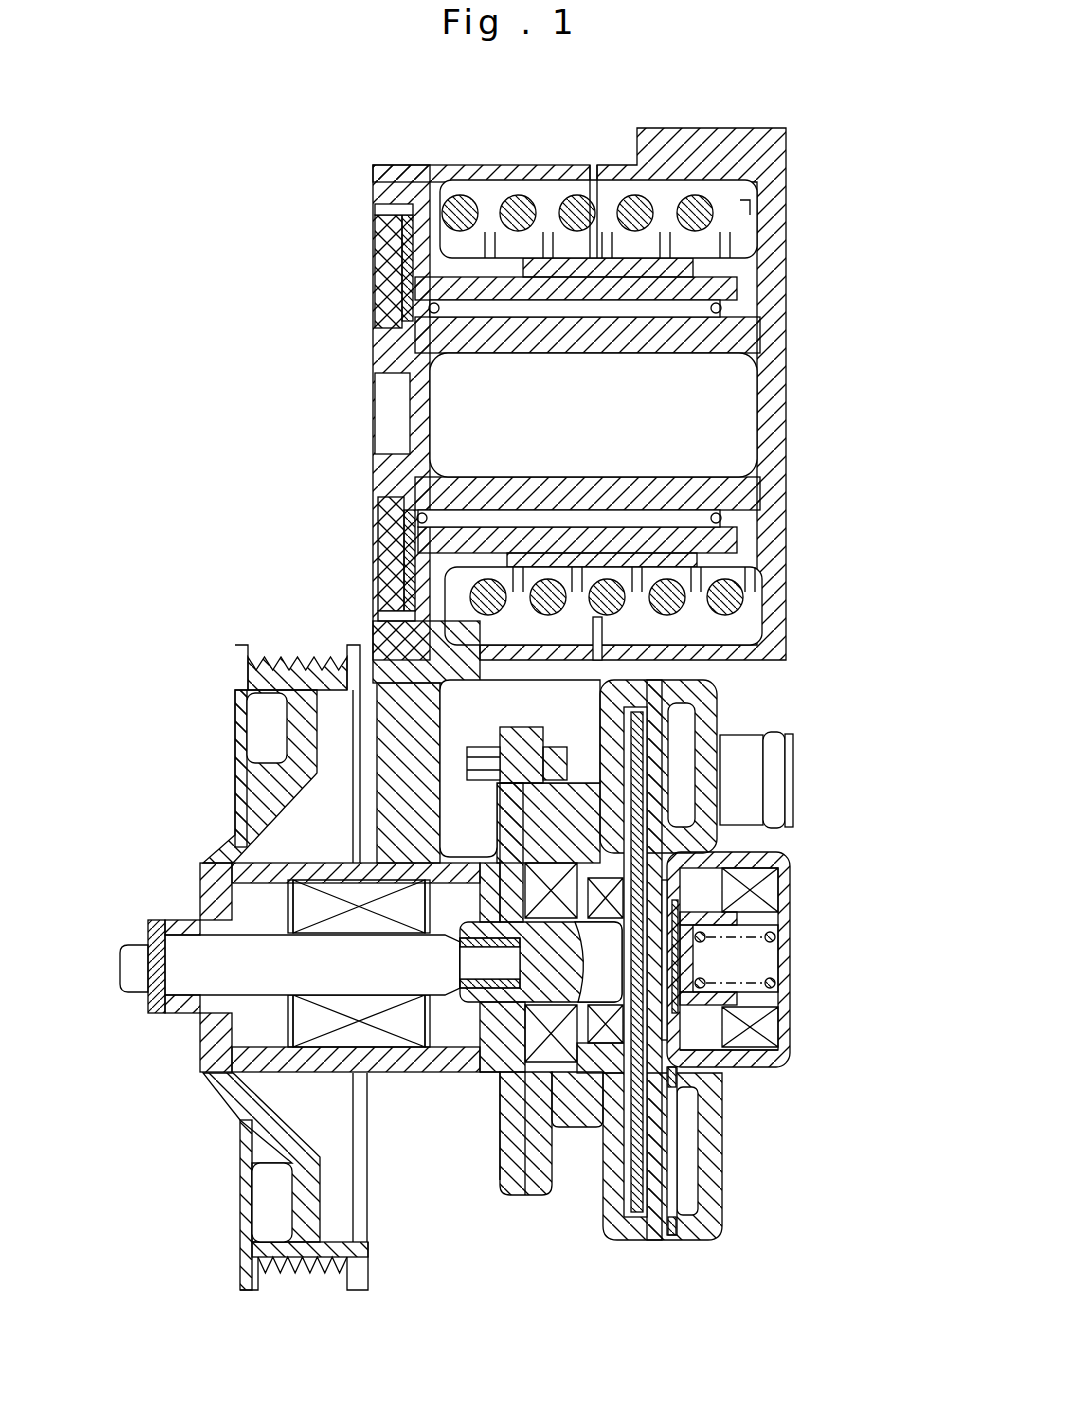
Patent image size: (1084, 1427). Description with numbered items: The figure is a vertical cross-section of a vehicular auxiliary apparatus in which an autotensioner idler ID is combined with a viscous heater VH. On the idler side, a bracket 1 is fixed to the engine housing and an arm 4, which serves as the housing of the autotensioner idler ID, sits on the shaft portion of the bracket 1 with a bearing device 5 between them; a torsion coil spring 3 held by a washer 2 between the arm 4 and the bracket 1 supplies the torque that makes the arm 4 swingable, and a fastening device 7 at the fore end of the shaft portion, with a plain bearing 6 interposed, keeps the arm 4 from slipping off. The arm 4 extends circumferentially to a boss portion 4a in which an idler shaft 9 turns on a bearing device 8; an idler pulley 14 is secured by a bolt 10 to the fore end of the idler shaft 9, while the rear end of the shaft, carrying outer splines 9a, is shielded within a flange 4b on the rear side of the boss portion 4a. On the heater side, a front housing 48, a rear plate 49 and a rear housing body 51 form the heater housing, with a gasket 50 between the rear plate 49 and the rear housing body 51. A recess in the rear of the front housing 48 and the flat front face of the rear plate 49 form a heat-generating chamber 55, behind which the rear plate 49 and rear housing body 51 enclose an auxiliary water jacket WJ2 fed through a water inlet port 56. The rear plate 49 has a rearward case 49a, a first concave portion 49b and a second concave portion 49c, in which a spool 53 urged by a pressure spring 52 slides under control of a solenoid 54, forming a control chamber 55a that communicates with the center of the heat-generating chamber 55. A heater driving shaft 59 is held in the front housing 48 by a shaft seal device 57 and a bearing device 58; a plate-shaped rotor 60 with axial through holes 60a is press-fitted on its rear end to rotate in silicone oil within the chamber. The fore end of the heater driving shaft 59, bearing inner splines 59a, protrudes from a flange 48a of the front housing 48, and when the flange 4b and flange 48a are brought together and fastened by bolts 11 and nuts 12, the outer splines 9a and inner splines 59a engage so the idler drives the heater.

The bracket 1 is at (770, 276).
The washer 2 is at (750, 228).
The torsion coil spring 3 is at (520, 210).
The arm 4 is at (430, 165).
The boss portion 4a is at (440, 1050).
The flange 4b is at (500, 1180).
The bearing device 5 is at (636, 310).
The plain bearing 6 is at (370, 230).
The fastening device 7 is at (373, 280).
The bearing device 8 is at (380, 1037).
The idler shaft 9 is at (337, 979).
The outer splines 9a is at (481, 886).
The bolt 10 is at (128, 952).
The bolts 11 is at (525, 765).
The nuts 12 is at (488, 757).
The idler pulley 14 is at (228, 840).
The front housing 48 is at (612, 1230).
The flange 48a is at (540, 1197).
The rear plate 49 is at (655, 1242).
The case 49a is at (783, 885).
The first concave portion 49b is at (790, 1062).
The second concave portion 49c is at (760, 953).
The gasket 50 is at (669, 1240).
The rear housing body 51 is at (703, 700).
The pressure spring 52 is at (765, 940).
The spool 53 is at (740, 918).
The solenoid 54 is at (772, 1026).
The heat-generating chamber 55 is at (628, 745).
The control chamber 55a is at (745, 958).
The water inlet port 56 is at (787, 775).
The shaft seal device 57 is at (596, 1080).
The bearing device 58 is at (543, 1030).
The heater driving shaft 59 is at (580, 971).
The inner splines 59a is at (492, 925).
The rotor 60 is at (655, 1158).
The through holes 60a is at (675, 1075).
The autotensioner idler ID is at (336, 447).
The auxiliary water jacket WJ2 is at (690, 735).
The viscous heater VH is at (848, 811).